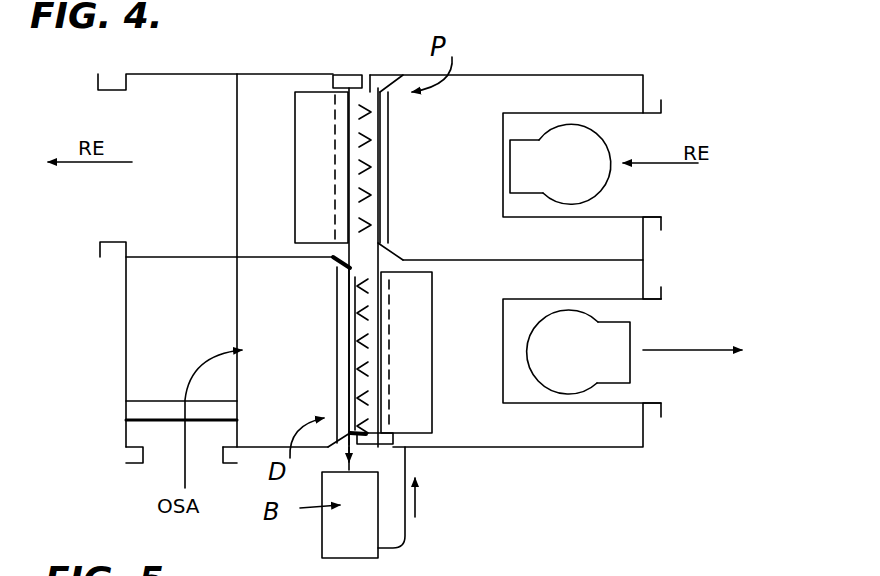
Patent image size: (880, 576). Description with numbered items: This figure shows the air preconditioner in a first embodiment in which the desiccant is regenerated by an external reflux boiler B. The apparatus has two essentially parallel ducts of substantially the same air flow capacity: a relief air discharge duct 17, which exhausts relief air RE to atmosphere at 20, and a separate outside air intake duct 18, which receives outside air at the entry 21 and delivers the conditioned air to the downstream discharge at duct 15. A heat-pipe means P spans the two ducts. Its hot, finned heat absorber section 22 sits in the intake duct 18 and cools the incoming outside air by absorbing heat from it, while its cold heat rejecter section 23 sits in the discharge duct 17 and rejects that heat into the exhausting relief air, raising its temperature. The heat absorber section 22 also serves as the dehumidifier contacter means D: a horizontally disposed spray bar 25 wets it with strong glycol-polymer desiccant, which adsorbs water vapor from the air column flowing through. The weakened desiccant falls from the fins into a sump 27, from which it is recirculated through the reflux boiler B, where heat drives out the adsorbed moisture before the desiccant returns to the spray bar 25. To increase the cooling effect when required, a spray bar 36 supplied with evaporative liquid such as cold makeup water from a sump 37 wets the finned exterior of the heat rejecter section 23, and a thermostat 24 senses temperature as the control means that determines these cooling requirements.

The discharge duct 15 is at (647, 312).
The relief air discharge duct 17 is at (202, 181).
The OSA intake duct 18 is at (502, 355).
The atmosphere exhaust 20 is at (110, 190).
The outside air entry 21 is at (157, 458).
The heat absorber section 22 is at (349, 328).
The heat rejecter section 23 is at (380, 166).
The thermostat 24 is at (345, 83).
The spray bar 25 is at (357, 356).
The sump 27 is at (337, 298).
The spray bar 36 is at (372, 207).
The sump 37 is at (388, 142).